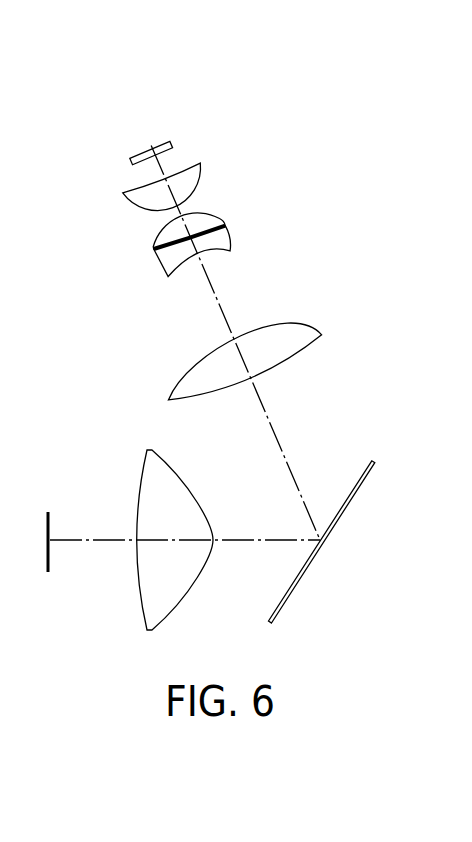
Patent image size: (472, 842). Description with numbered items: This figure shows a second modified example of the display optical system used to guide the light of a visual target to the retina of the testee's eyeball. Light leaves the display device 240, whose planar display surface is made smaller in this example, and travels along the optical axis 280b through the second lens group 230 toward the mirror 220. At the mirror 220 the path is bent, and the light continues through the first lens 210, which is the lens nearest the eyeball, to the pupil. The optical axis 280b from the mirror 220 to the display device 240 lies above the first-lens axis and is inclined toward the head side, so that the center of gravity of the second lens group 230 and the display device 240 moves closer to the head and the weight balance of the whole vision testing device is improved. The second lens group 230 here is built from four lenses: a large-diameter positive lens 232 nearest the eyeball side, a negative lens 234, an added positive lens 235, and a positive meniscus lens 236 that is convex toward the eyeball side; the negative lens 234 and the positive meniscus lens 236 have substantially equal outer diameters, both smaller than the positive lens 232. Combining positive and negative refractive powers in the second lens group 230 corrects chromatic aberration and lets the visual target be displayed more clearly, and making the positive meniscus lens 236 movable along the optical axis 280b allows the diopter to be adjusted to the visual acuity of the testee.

The first lens 210 is at (179, 472).
The mirror 220 is at (287, 594).
The second lens group 230 is at (251, 277).
The positive lens 232 is at (252, 365).
The negative lens 234 is at (229, 251).
The positive lens 235 is at (216, 217).
The positive meniscus lens 236 is at (200, 183).
The display device 240 is at (129, 152).
The optical axis 280b is at (282, 450).